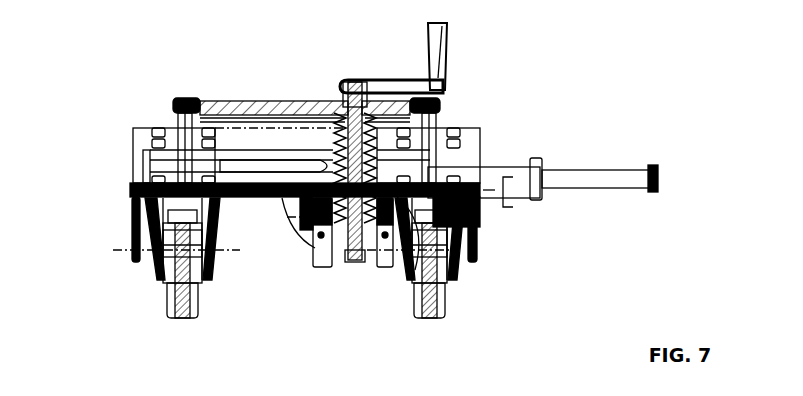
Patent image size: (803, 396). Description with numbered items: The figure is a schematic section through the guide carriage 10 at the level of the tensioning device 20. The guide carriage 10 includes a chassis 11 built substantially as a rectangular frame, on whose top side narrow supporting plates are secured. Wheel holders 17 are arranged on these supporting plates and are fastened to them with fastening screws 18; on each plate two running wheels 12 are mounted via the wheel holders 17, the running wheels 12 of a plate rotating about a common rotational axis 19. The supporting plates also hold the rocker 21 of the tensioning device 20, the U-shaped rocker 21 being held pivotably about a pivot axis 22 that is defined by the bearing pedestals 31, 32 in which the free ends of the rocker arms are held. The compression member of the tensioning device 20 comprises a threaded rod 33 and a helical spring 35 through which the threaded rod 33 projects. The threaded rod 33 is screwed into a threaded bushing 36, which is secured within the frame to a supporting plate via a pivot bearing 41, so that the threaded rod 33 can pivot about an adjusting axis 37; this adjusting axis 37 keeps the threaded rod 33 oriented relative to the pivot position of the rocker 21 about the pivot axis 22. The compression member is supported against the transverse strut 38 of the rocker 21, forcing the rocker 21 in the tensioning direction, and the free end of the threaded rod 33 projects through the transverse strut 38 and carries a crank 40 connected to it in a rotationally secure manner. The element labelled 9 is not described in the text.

The shaft 9 is at (600, 176).
The guide carriage 10 is at (128, 155).
The chassis 11 is at (130, 215).
The running wheels 12 is at (183, 310).
The wheel holders 17 is at (147, 238).
The fastening screws 18 is at (160, 128).
The rotational axis 19 is at (122, 252).
The tensioning device 20 is at (318, 143).
The rocker 21 is at (193, 96).
The pivot axis 22 is at (254, 126).
The bearing pedestal 31 is at (175, 108).
The bearing pedestal 32 is at (438, 118).
The threaded rod 33 is at (360, 260).
The helical spring 35 is at (325, 120).
The threaded bushing 36 is at (327, 262).
The adjusting axis 37 is at (288, 218).
The transverse strut 38 is at (225, 101).
The crank 40 is at (393, 86).
The pivot bearing 41 is at (342, 228).